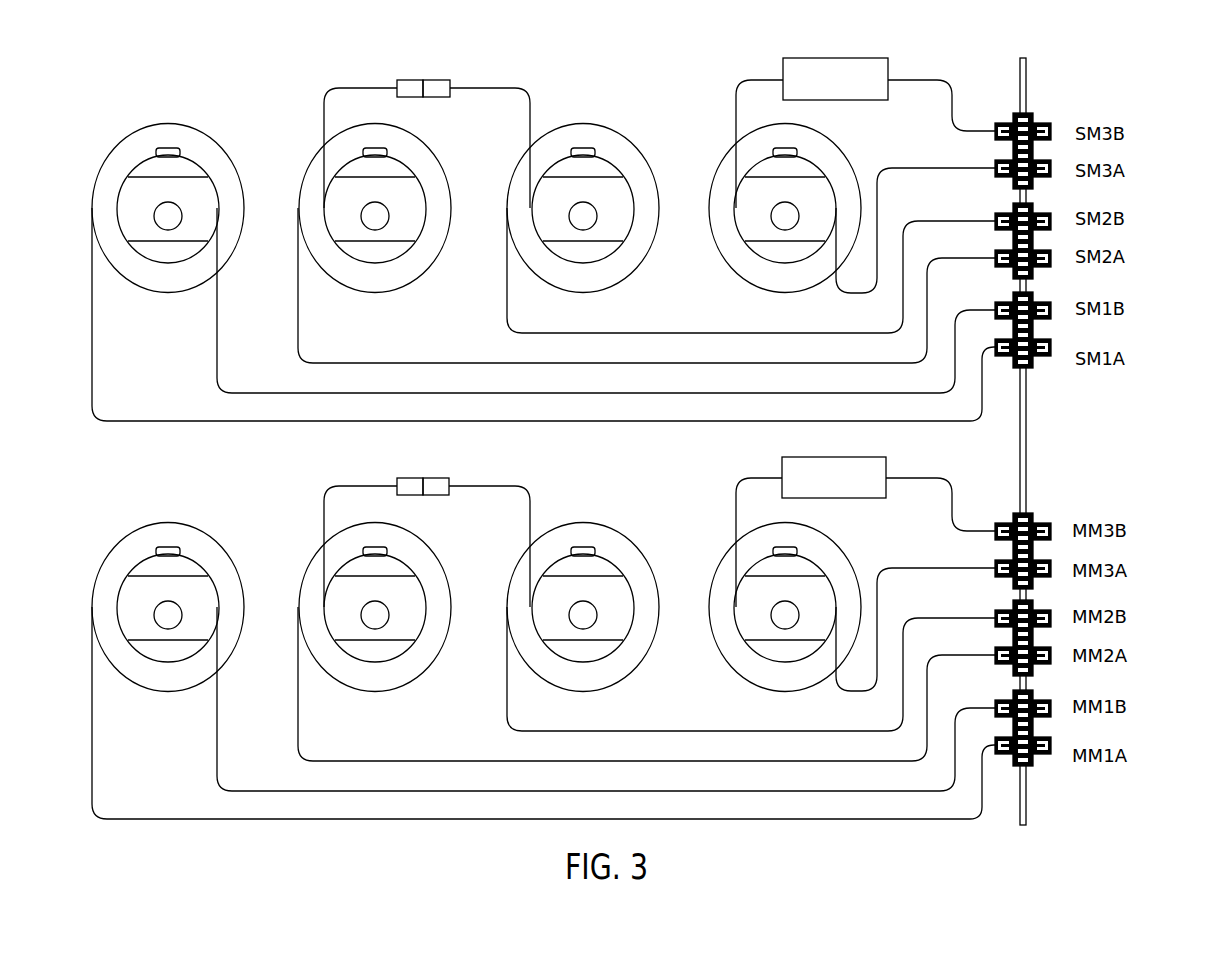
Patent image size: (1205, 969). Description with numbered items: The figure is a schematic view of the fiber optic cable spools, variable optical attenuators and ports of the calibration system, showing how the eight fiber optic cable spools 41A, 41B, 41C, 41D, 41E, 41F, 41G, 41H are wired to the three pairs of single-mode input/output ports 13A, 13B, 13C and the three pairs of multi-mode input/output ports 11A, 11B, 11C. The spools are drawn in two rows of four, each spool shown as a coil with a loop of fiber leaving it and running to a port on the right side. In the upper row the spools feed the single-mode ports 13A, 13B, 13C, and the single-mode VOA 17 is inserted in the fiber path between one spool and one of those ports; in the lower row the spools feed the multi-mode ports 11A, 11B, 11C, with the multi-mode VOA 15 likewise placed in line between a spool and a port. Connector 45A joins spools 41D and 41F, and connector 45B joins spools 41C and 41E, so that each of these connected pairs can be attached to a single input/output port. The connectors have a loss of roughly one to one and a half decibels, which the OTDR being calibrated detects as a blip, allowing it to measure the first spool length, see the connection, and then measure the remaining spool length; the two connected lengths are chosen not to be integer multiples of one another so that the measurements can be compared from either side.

The fiber optic cable spool 41A is at (217, 535).
The fiber optic cable spool 41B is at (217, 137).
The fiber optic cable spool 41C is at (444, 570).
The fiber optic cable spool 41D is at (444, 172).
The fiber optic cable spool 41E is at (625, 536).
The fiber optic cable spool 41F is at (625, 138).
The fiber optic cable spool 41G is at (854, 570).
The fiber optic cable spool 41H is at (854, 172).
The connector 45A is at (445, 80).
The connector 45B is at (442, 478).
The multi-mode VOA 15 is at (866, 58).
The single-mode VOA 17 is at (863, 457).
The single-mode input/output port 13A is at (1122, 156).
The single-mode input/output port 13B is at (1122, 242).
The single-mode input/output port 13C is at (1122, 336).
The multi-mode input/output port 11A is at (1122, 554).
The multi-mode input/output port 11B is at (1122, 639).
The multi-mode input/output port 11C is at (1122, 731).